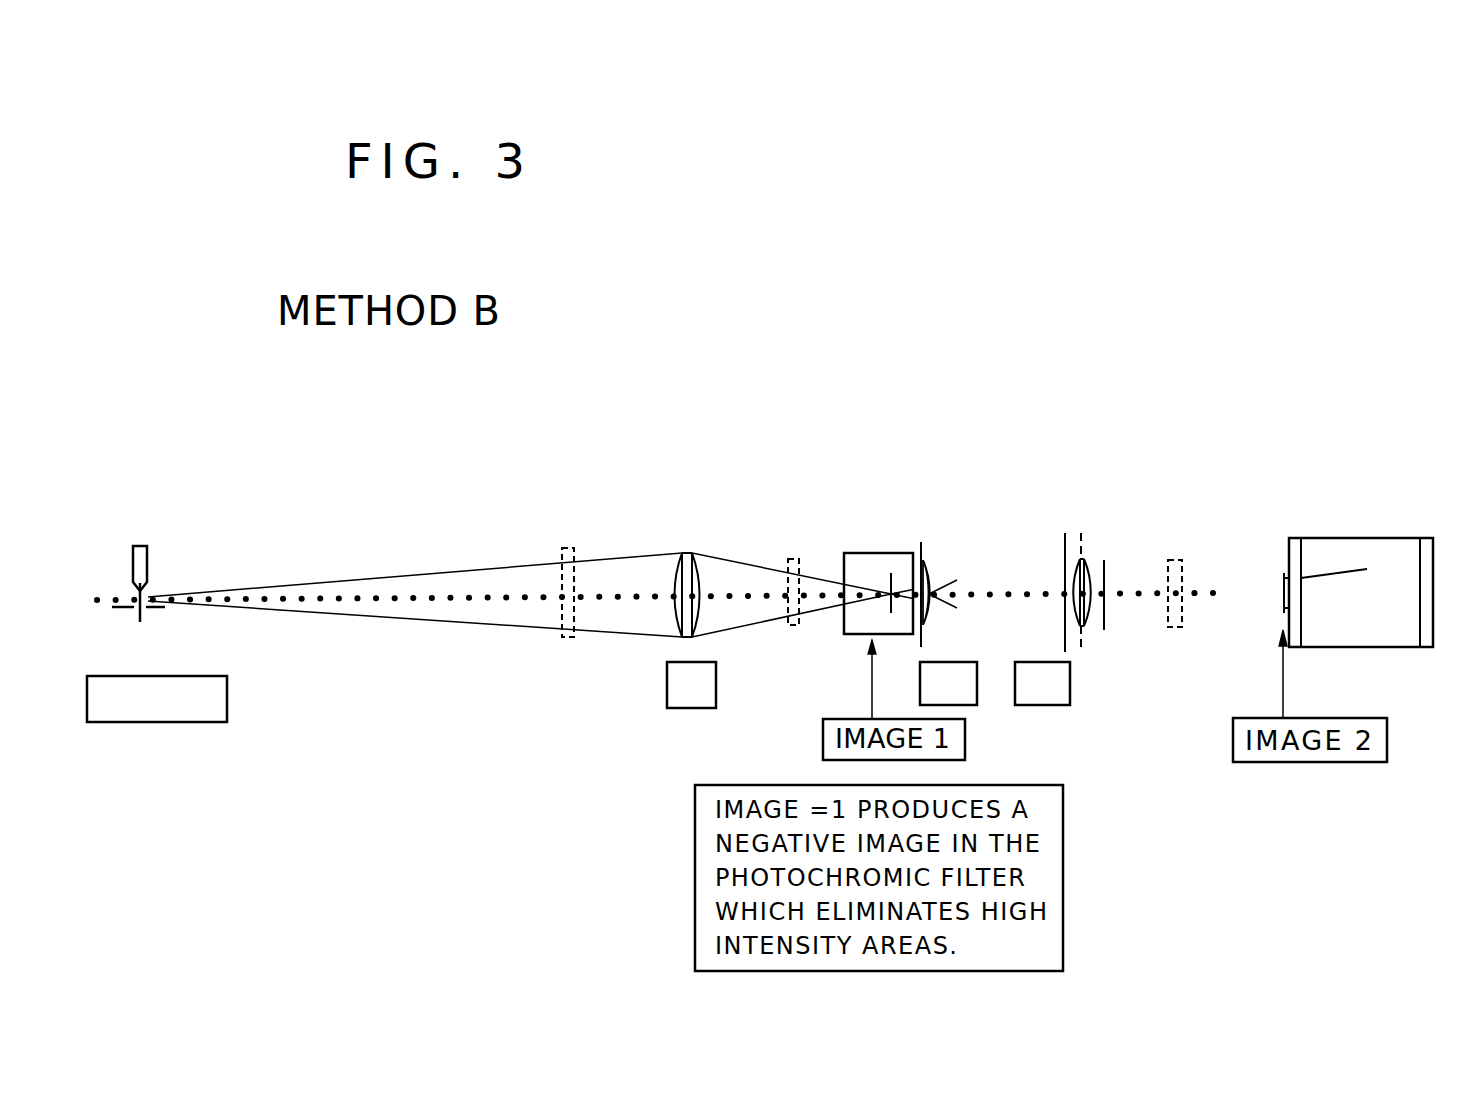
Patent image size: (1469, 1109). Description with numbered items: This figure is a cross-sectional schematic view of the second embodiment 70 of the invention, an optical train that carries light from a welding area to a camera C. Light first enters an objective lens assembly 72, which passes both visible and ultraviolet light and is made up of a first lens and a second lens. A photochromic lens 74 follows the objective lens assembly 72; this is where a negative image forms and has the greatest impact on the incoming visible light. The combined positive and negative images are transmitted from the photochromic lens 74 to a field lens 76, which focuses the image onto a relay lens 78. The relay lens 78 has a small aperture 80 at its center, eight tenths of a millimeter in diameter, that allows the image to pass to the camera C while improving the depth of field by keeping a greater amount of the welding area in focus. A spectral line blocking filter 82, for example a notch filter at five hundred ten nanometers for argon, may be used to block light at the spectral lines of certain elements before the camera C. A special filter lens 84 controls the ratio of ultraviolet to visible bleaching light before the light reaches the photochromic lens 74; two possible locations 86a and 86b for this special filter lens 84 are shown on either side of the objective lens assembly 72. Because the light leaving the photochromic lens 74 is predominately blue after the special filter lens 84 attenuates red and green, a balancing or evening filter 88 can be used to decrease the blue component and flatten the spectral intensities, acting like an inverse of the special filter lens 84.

The second embodiment 70 is at (912, 352).
The objective lens assembly 72 is at (682, 637).
The photochromic lens 74 is at (878, 553).
The field lens 76 is at (927, 578).
The relay lens 78 is at (1083, 559).
The small aperture 80 is at (1061, 595).
The spectral line blocking filter 82 is at (1106, 556).
The special filter lens 84 is at (568, 547).
The first location for special filter lens 86a is at (568, 638).
The second location for special filter lens 86b is at (793, 626).
The balancing or evening filter 88 is at (1178, 560).
The camera C is at (1433, 538).